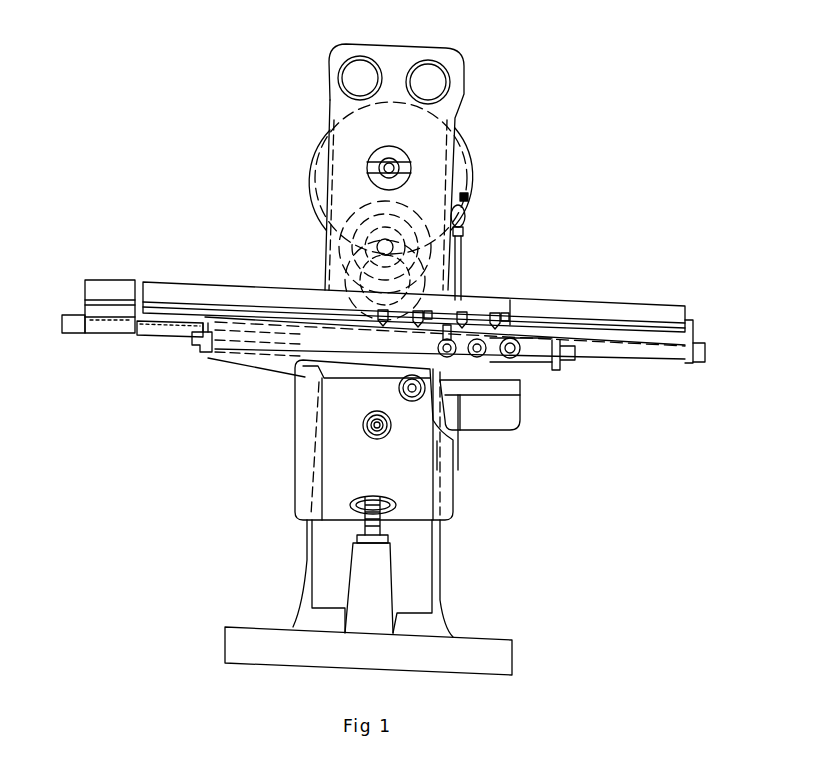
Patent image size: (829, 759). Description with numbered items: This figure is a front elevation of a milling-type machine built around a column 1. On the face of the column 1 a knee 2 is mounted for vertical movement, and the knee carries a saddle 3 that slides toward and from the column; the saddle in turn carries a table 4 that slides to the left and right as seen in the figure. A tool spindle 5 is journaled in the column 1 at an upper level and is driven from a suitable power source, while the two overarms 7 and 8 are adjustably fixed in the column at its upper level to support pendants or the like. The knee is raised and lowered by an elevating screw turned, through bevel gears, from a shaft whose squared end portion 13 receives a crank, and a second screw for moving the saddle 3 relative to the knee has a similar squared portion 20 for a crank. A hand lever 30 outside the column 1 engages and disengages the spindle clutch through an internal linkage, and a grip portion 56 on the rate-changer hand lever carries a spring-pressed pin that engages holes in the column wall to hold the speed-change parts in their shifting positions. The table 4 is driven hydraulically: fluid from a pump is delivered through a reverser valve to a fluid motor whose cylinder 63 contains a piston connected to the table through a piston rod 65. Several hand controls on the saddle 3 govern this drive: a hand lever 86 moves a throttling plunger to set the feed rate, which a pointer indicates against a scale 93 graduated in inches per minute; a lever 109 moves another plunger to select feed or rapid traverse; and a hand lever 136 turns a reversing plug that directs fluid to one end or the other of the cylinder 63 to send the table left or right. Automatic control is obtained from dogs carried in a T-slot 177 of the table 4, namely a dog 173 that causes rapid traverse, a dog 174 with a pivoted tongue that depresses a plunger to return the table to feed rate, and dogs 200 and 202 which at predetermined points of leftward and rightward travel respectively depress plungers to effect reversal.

The column 1 is at (440, 565).
The knee 2 is at (295, 484).
The saddle 3 is at (260, 362).
The table 4 is at (623, 304).
The tool spindle 5 is at (400, 162).
The overarm 7 is at (361, 73).
The overarm 8 is at (437, 78).
The squared end portion 13 is at (363, 425).
The squared portion 20 is at (437, 433).
The hand lever 30 is at (467, 217).
The grip portion 56 is at (470, 196).
The cylinder 63 is at (237, 345).
The piston rod 65 is at (637, 353).
The hand lever 86 is at (513, 343).
The scale 93 is at (523, 350).
The lever 109 is at (492, 302).
The hand lever 136 is at (452, 318).
The dog 173 is at (445, 292).
The dog 174 is at (515, 302).
The T-slot 177 is at (253, 300).
The dog 200 is at (478, 300).
The dog 202 is at (385, 303).